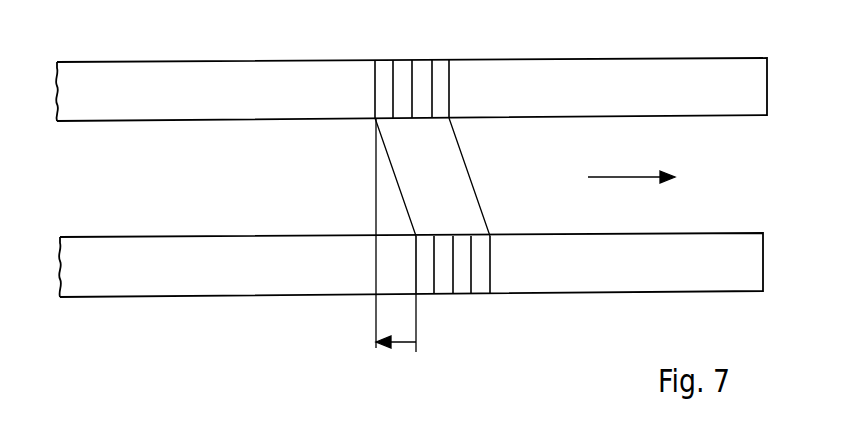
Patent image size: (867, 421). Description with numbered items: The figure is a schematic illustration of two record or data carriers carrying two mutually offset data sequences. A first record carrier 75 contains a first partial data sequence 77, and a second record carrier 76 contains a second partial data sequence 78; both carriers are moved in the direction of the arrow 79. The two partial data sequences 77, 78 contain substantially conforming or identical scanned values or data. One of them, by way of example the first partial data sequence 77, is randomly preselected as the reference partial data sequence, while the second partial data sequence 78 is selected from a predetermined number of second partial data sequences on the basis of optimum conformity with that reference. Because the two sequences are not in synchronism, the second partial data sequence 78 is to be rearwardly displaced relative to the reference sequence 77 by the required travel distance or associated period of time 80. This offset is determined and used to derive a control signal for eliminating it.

The first record carrier 75 is at (208, 62).
The second record carrier 76 is at (213, 237).
The first partial data sequence 77 is at (375, 60).
The second partial data sequence 78 is at (416, 295).
The arrow 79 is at (610, 176).
The travel distance or period of time 80 is at (403, 345).